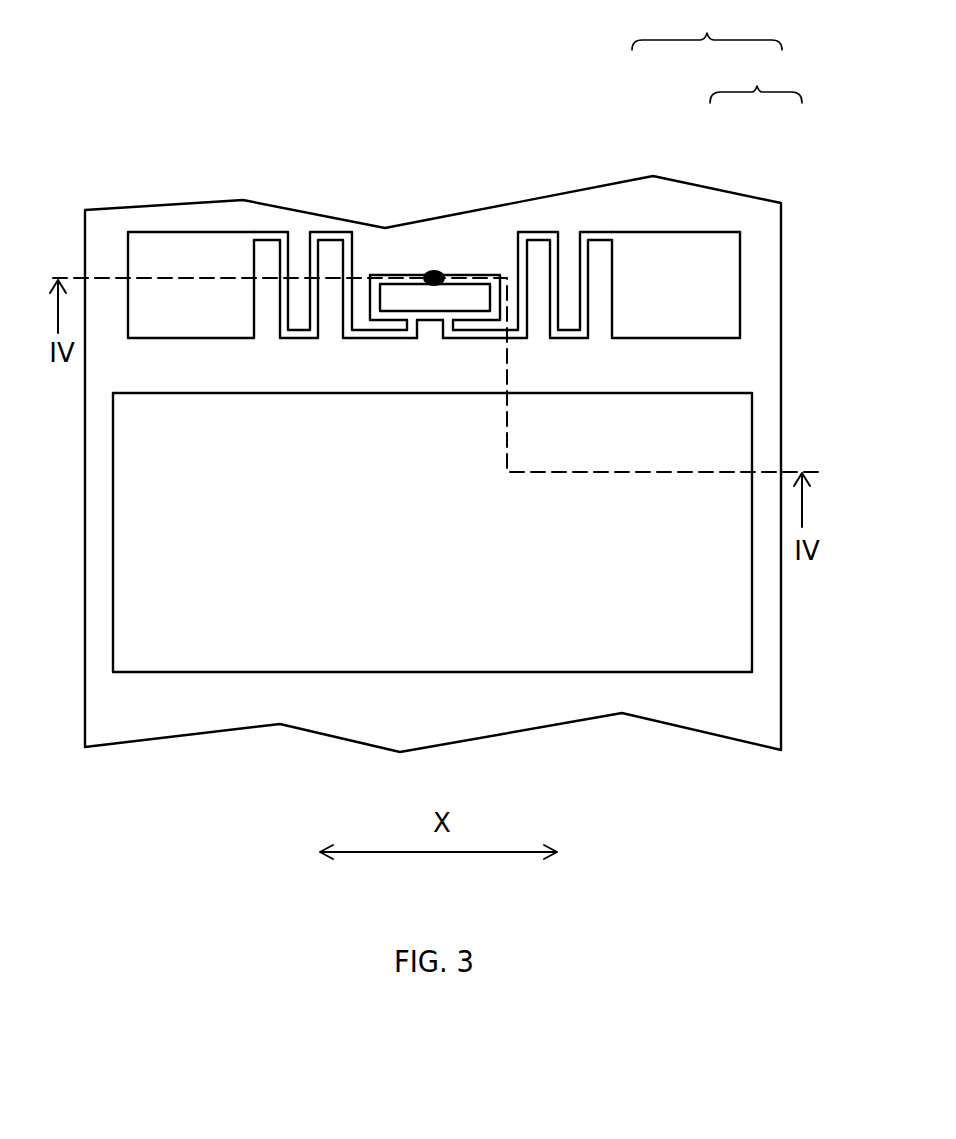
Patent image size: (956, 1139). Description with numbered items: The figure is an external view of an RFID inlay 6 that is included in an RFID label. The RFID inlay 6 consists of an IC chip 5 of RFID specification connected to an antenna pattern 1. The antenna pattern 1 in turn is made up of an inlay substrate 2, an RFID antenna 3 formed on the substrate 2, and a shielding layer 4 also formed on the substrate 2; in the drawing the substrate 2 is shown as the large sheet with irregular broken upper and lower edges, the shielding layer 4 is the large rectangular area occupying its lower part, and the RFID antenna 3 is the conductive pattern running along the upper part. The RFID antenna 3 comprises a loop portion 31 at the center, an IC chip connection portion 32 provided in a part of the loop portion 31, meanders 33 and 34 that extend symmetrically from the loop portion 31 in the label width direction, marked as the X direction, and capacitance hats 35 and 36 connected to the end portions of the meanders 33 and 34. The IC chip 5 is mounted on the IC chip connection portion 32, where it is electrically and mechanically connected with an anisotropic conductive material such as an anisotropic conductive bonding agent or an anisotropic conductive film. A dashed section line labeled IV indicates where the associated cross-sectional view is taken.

The antenna pattern 1 is at (756, 77).
The inlay substrate 2 is at (718, 210).
The RFID antenna 3 is at (677, 233).
The shielding layer 4 is at (735, 405).
The IC chip 5 is at (430, 272).
The RFID inlay 6 is at (707, 25).
The loop portion 31 is at (402, 273).
The IC chip connection portion 32 is at (449, 272).
The meander 33 is at (348, 343).
The meander 34 is at (530, 343).
The capacitance hat 35 is at (198, 238).
The capacitance hat 36 is at (655, 245).